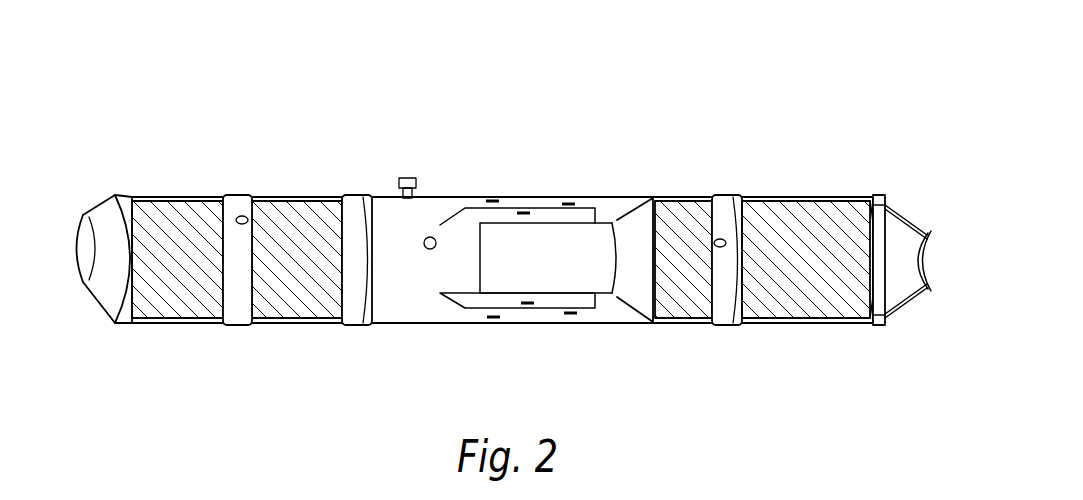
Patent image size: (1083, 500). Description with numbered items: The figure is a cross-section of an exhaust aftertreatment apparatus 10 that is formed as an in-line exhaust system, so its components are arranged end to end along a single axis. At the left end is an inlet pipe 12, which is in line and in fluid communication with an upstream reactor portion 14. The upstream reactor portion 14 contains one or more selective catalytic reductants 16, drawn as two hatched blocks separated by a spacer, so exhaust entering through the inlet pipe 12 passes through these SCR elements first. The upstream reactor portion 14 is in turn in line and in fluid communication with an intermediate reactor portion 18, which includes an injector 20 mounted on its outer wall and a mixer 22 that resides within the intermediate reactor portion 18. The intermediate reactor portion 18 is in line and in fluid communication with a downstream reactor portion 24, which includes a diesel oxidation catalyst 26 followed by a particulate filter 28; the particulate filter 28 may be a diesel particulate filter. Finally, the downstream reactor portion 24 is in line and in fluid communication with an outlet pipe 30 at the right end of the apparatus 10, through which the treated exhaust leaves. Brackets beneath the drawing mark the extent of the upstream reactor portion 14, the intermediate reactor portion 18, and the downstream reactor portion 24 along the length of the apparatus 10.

The apparatus 10 is at (313, 70).
The inlet pipe 12 is at (90, 232).
The upstream reactor portion 14 is at (343, 332).
The selective catalytic reductant 16 is at (180, 240).
The intermediate reactor portion 18 is at (653, 332).
The injector 20 is at (408, 178).
The mixer 22 is at (538, 252).
The downstream reactor portion 24 is at (873, 332).
The diesel oxidation catalyst 26 is at (693, 253).
The particulate filter 28 is at (800, 237).
The outlet pipe 30 is at (918, 249).